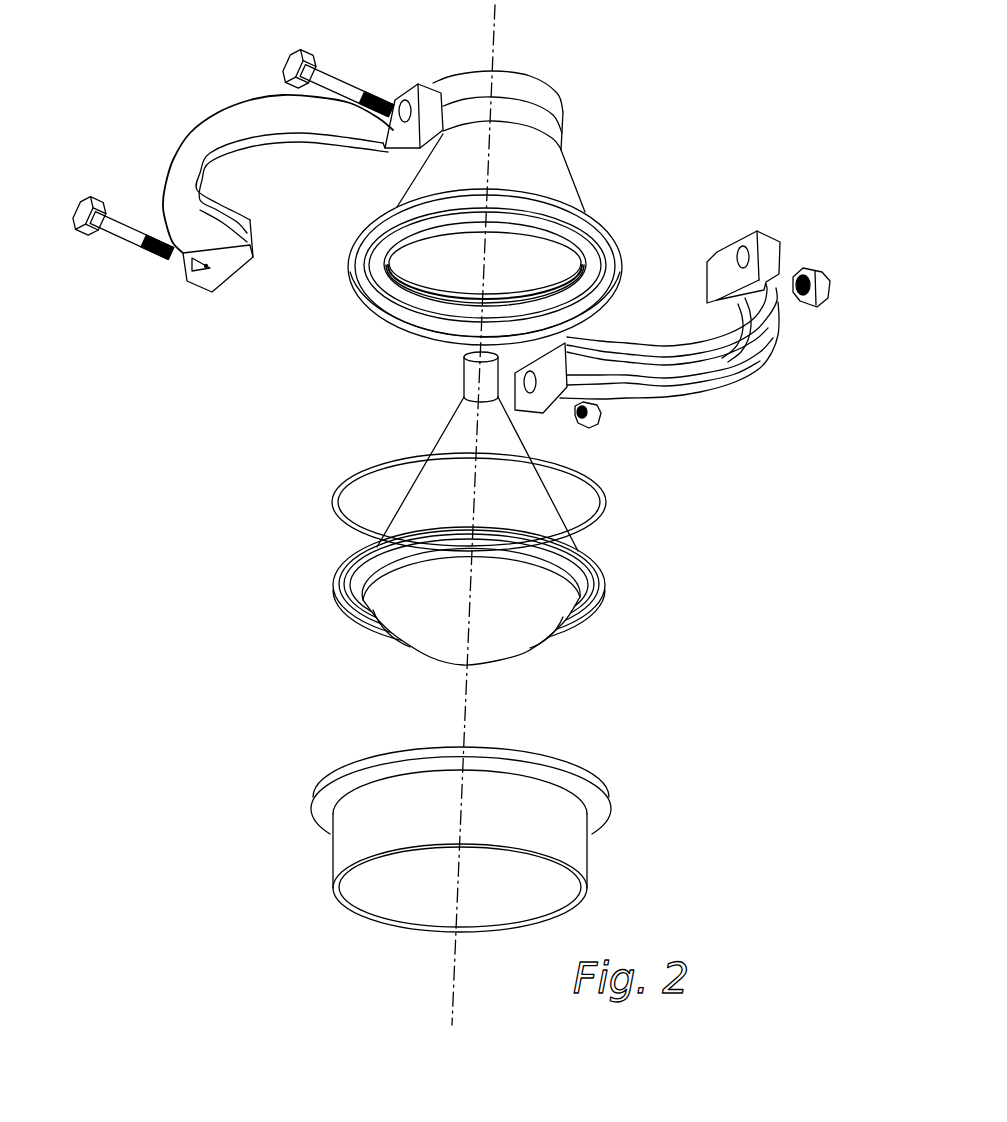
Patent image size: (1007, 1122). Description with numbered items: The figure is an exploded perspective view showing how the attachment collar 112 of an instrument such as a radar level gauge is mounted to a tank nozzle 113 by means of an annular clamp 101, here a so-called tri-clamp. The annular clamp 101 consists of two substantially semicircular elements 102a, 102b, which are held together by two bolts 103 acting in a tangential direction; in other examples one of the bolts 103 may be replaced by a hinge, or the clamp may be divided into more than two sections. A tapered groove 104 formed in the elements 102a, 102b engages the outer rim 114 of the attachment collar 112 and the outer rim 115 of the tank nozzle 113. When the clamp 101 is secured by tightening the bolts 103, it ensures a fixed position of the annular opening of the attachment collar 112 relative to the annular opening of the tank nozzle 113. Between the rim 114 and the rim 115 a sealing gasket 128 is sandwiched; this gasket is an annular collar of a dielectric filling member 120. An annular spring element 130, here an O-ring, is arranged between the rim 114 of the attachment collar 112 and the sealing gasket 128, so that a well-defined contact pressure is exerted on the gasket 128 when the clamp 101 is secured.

The annular clamp 101 is at (198, 86).
The semicircular element 102a is at (177, 163).
The semicircular element 102b is at (735, 365).
The bolt 103 is at (343, 78).
The tapered groove 104 is at (240, 243).
The attachment collar 112 is at (555, 181).
The tank nozzle 113 is at (506, 839).
The rim 114 is at (610, 280).
The rim 115 is at (604, 793).
The dielectric filling member 120 is at (529, 591).
The sealing gasket 128 is at (606, 590).
The annular spring element 130 is at (338, 498).